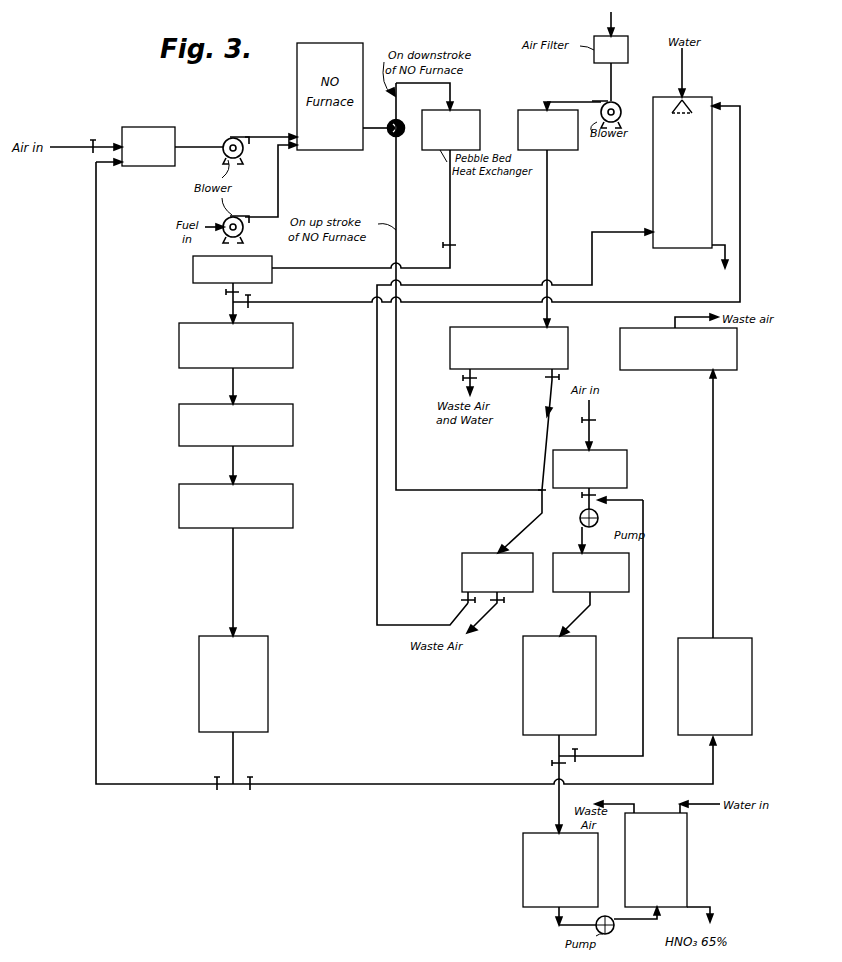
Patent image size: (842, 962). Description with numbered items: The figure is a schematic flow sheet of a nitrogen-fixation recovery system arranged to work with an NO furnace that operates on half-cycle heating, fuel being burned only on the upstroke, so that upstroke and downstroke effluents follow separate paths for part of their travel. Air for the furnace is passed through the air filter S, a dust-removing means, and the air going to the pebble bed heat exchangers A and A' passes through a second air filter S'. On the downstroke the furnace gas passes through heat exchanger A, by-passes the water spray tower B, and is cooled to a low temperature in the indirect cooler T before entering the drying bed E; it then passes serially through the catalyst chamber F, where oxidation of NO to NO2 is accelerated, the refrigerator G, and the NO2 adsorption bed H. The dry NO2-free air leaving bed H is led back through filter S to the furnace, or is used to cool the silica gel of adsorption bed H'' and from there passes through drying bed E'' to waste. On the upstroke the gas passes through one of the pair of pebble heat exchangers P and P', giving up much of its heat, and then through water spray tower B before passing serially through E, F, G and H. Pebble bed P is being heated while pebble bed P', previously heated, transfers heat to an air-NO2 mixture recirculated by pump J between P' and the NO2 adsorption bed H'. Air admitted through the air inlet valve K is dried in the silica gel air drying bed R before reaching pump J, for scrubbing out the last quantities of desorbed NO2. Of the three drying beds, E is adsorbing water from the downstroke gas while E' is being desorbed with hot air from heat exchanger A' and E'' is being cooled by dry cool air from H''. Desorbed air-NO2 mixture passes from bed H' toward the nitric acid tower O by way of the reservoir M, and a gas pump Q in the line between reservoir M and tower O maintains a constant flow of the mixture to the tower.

The air filter S is at (148, 136).
The air filter S' is at (624, 50).
The indirect cooler T is at (193, 265).
The drying bed E is at (248, 345).
The catalyst chamber F is at (293, 434).
The refrigerator G is at (293, 520).
The NO2 adsorption bed H is at (247, 684).
The pebble bed heat exchanger A is at (454, 118).
The pebble bed heat exchanger A' is at (551, 142).
The water spray tower B is at (652, 193).
The drying bed E' is at (509, 361).
The drying bed E'' is at (678, 363).
The air inlet valve K is at (598, 420).
The air drying bed R is at (627, 470).
The pump J is at (598, 513).
The pebble heat exchanger P is at (499, 582).
The pebble heat exchanger P' is at (591, 583).
The NO2 adsorption bed H' is at (574, 685).
The NO2 adsorption bed H'' is at (731, 686).
The reservoir M is at (521, 863).
The nitric acid tower O is at (687, 858).
The gas pump Q is at (614, 928).